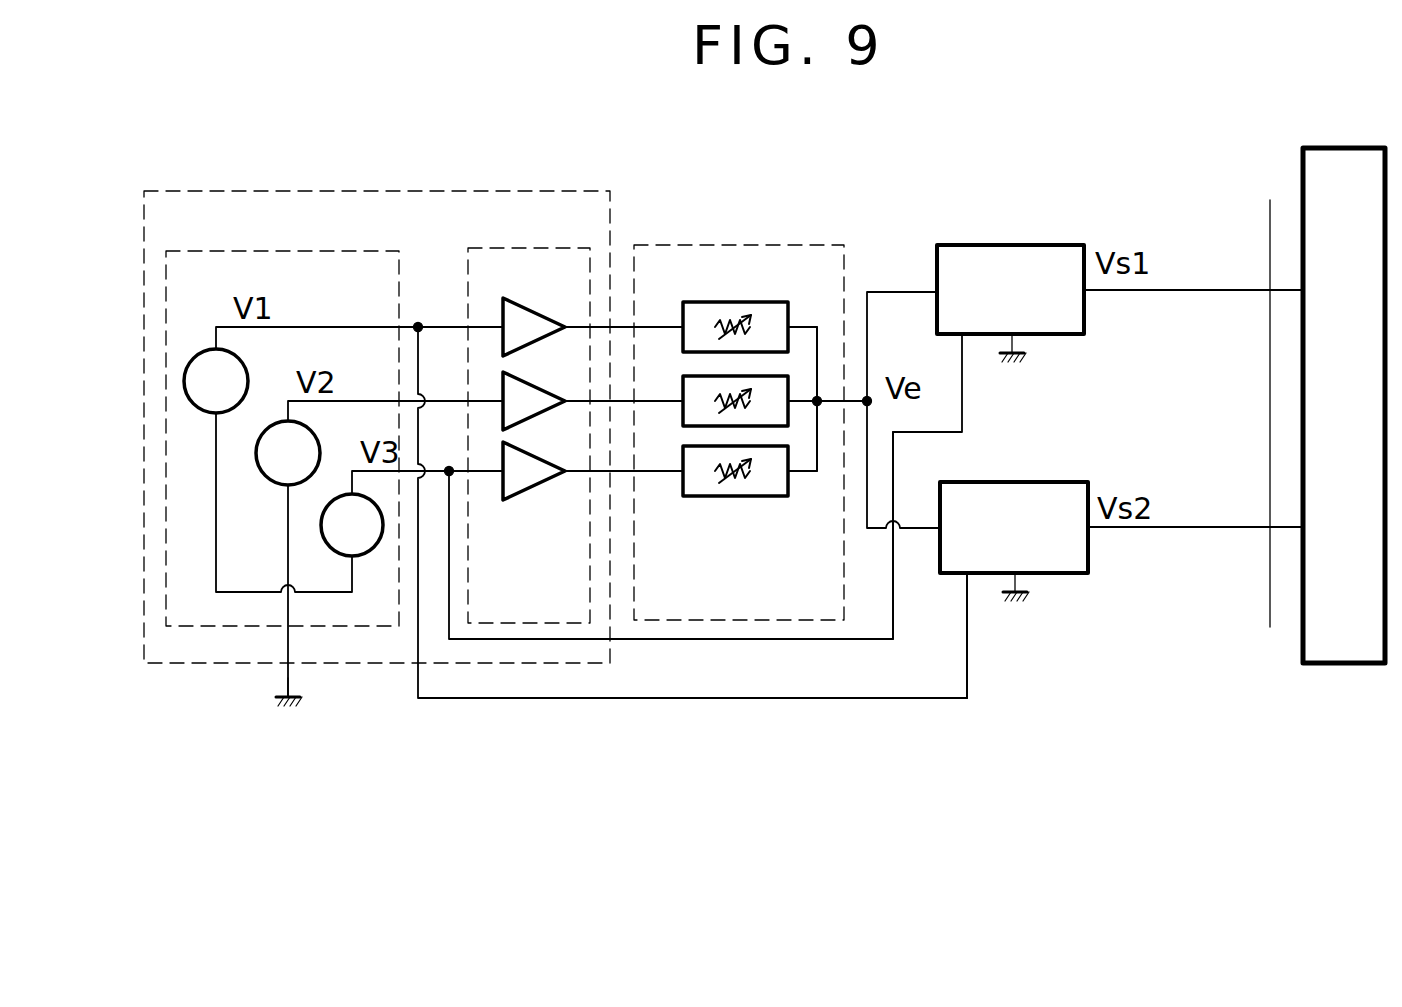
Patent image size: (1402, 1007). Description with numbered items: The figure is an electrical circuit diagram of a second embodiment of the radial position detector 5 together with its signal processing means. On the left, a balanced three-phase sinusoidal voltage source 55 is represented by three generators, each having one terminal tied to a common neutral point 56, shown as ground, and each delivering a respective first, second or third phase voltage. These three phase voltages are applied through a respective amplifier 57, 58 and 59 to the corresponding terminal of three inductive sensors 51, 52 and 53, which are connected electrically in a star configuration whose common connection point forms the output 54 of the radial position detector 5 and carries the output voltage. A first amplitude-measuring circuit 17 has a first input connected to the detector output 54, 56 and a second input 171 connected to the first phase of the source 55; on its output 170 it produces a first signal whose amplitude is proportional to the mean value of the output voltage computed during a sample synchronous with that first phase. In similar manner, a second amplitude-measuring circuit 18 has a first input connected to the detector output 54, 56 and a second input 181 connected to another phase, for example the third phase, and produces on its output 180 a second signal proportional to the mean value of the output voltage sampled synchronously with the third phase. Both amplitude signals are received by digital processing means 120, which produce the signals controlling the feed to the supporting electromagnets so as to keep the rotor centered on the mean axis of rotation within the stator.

The radial position detector 5 is at (688, 712).
The first amplitude-measuring circuit 17 is at (1040, 255).
The second amplitude-measuring circuit 18 is at (1040, 495).
The inductive sensor 51 is at (757, 304).
The inductive sensor 52 is at (695, 383).
The inductive sensor 53 is at (752, 483).
The common connection point 54 is at (820, 406).
The balanced three-phase sinusoidal voltage source 55 is at (372, 210).
The neutral point 56 is at (280, 697).
The amplifier 57 is at (520, 312).
The amplifier 58 is at (532, 393).
The amplifier 59 is at (528, 472).
The digital processing means 120 is at (1335, 168).
The output of the first amplitude-measuring circuit 170 is at (1162, 290).
The second input of the first amplitude-measuring circuit 171 is at (893, 472).
The output of the second amplitude-measuring circuit 180 is at (1180, 526).
The second input of the second amplitude-measuring circuit 181 is at (967, 652).